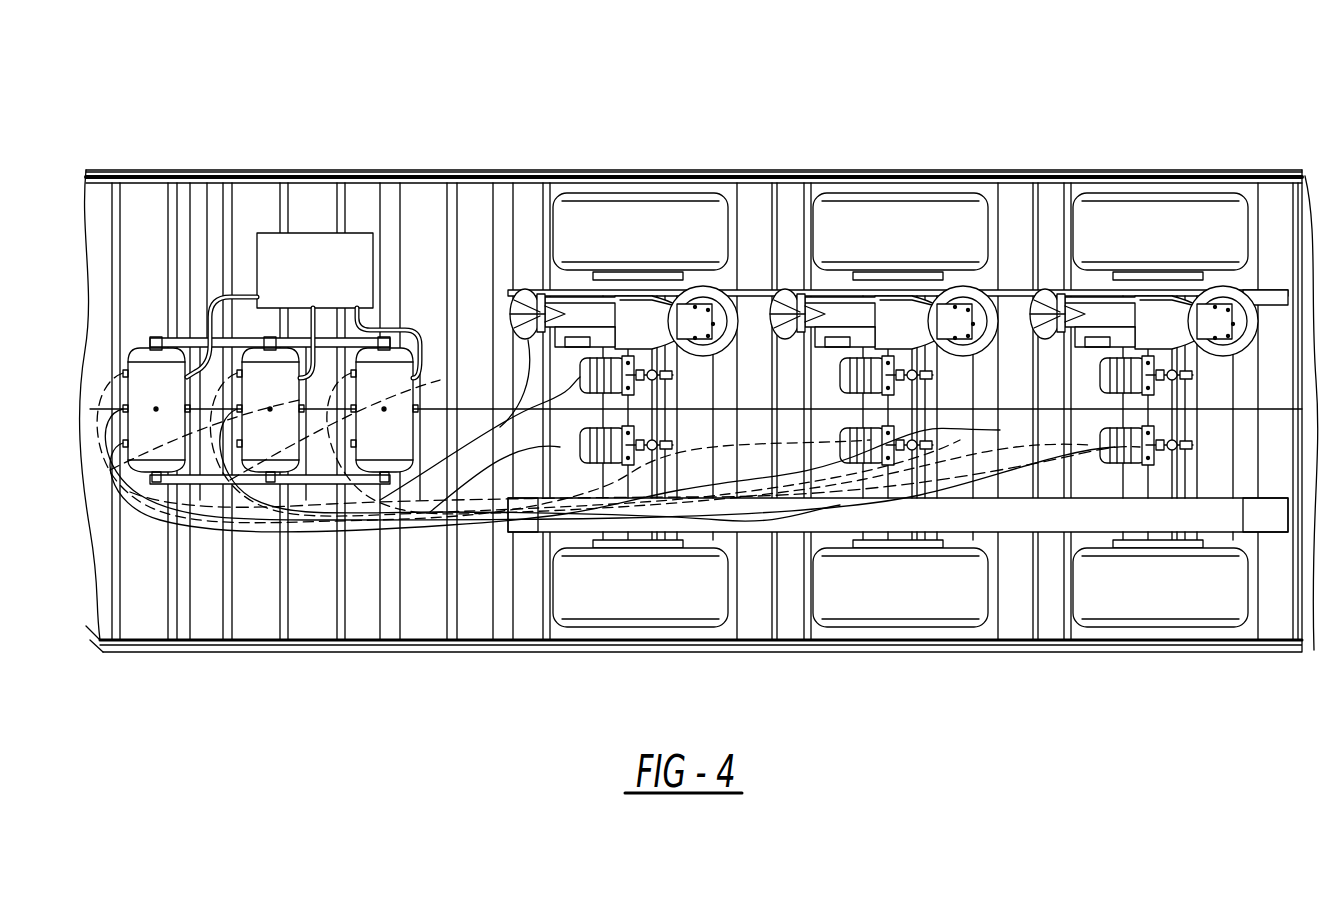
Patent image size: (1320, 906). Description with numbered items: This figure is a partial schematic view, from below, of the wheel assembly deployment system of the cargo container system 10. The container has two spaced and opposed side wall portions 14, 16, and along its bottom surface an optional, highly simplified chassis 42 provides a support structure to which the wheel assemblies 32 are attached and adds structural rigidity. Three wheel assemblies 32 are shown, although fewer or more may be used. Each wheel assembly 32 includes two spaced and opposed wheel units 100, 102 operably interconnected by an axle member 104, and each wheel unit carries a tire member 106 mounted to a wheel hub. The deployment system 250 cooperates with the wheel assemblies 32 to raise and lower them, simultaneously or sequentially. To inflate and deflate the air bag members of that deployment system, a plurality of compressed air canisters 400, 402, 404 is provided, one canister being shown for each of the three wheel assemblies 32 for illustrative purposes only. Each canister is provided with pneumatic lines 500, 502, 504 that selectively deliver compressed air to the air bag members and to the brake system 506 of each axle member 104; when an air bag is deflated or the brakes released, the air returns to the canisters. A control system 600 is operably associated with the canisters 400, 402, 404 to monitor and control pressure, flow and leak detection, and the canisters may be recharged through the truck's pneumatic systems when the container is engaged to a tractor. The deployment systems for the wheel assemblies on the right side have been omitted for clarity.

The cargo container system 10 is at (827, 94).
The side wall portion 14 is at (549, 152).
The side wall portion 16 is at (530, 659).
The wheel assembly 32 is at (665, 152).
The chassis 42 is at (213, 192).
The wheel unit 100 is at (599, 189).
The wheel unit 102 is at (589, 631).
The axle member 104 is at (660, 520).
The tire member 106 is at (661, 220).
The deployment system 250 is at (363, 207).
The compressed air canister 400 is at (146, 355).
The compressed air canister 402 is at (252, 356).
The compressed air canister 404 is at (383, 356).
The pneumatic line 500 is at (528, 360).
The pneumatic line 502 is at (505, 428).
The pneumatic line 504 is at (458, 510).
The brake system 506 is at (567, 588).
The control system 600 is at (313, 230).